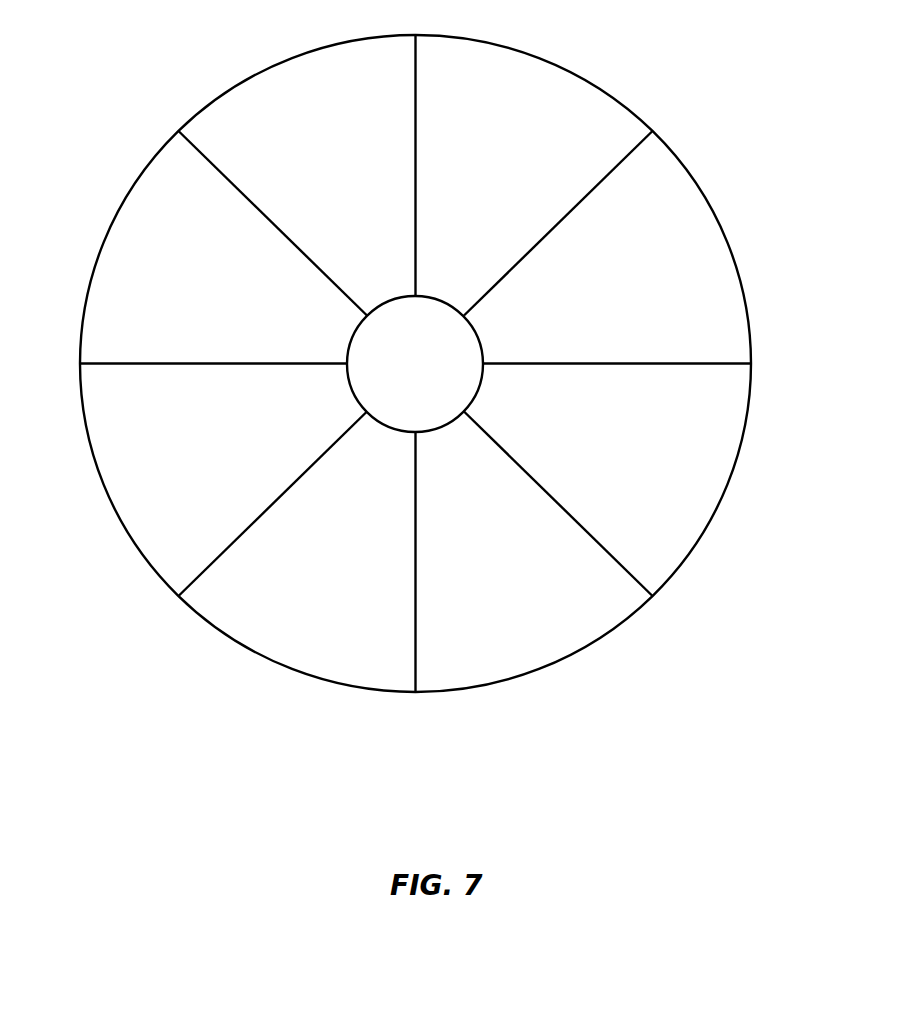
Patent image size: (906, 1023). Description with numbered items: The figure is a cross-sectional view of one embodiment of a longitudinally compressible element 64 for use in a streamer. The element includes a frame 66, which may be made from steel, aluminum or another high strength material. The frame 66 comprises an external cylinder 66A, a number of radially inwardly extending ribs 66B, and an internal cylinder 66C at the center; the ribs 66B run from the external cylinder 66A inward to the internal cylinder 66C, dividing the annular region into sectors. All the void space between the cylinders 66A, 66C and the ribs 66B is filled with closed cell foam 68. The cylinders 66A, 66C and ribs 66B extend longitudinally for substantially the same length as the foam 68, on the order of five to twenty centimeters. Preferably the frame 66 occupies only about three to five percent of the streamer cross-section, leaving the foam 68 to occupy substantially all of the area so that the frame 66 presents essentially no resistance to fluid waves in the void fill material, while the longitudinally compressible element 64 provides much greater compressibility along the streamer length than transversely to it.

The longitudinally compressible element 64 is at (418, 369).
The frame 66 is at (450, 363).
The external cylinder 66A is at (727, 233).
The radially inwardly extending ribs 66B is at (415, 107).
The internal cylinder 66C is at (393, 432).
The closed cell foam 68 is at (432, 378).